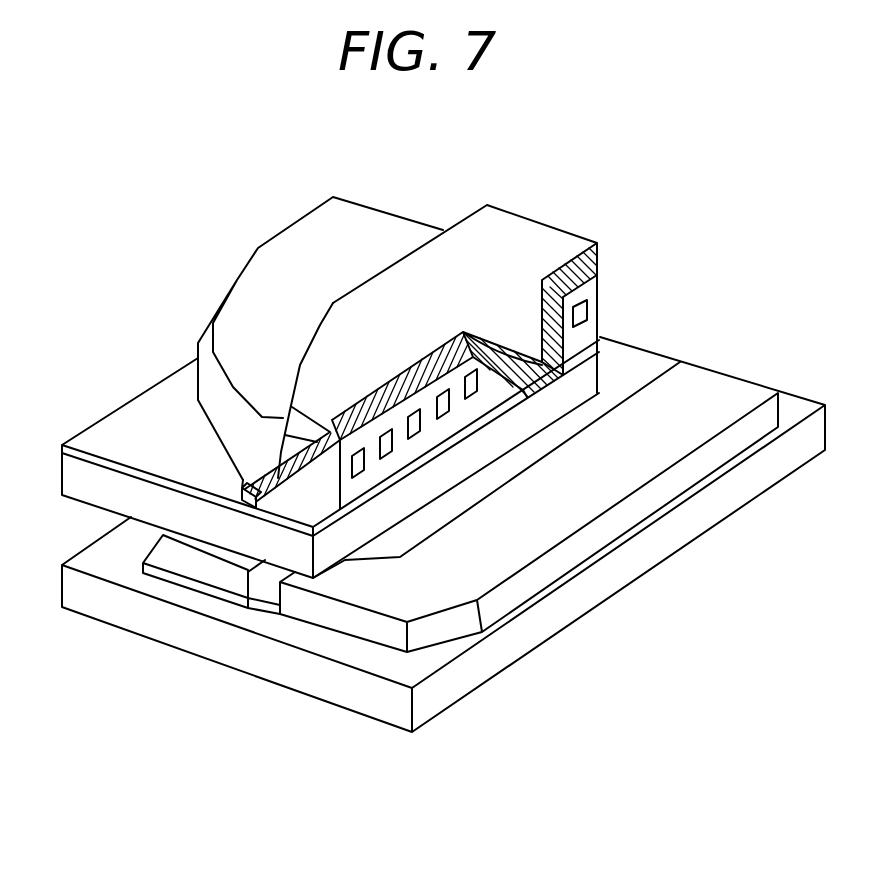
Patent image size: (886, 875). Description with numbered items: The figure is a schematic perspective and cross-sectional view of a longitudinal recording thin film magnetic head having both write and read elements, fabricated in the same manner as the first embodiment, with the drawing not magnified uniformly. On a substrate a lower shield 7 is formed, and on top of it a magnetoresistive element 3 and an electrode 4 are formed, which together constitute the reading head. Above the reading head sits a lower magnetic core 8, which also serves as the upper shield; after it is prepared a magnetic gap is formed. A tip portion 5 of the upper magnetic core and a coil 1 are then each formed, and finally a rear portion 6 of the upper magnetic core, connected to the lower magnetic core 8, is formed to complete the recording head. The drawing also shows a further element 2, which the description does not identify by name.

The coil 1 is at (445, 412).
The dome-shaped body 2 is at (295, 238).
The magnetoresistive element 3 is at (263, 603).
The electrode 4 is at (346, 613).
The tip portion of upper magnetic core 5 is at (242, 494).
The rear portion of upper magnetic core 6 is at (530, 230).
The lower shield 7 is at (527, 640).
The lower magnetic core 8 is at (72, 482).